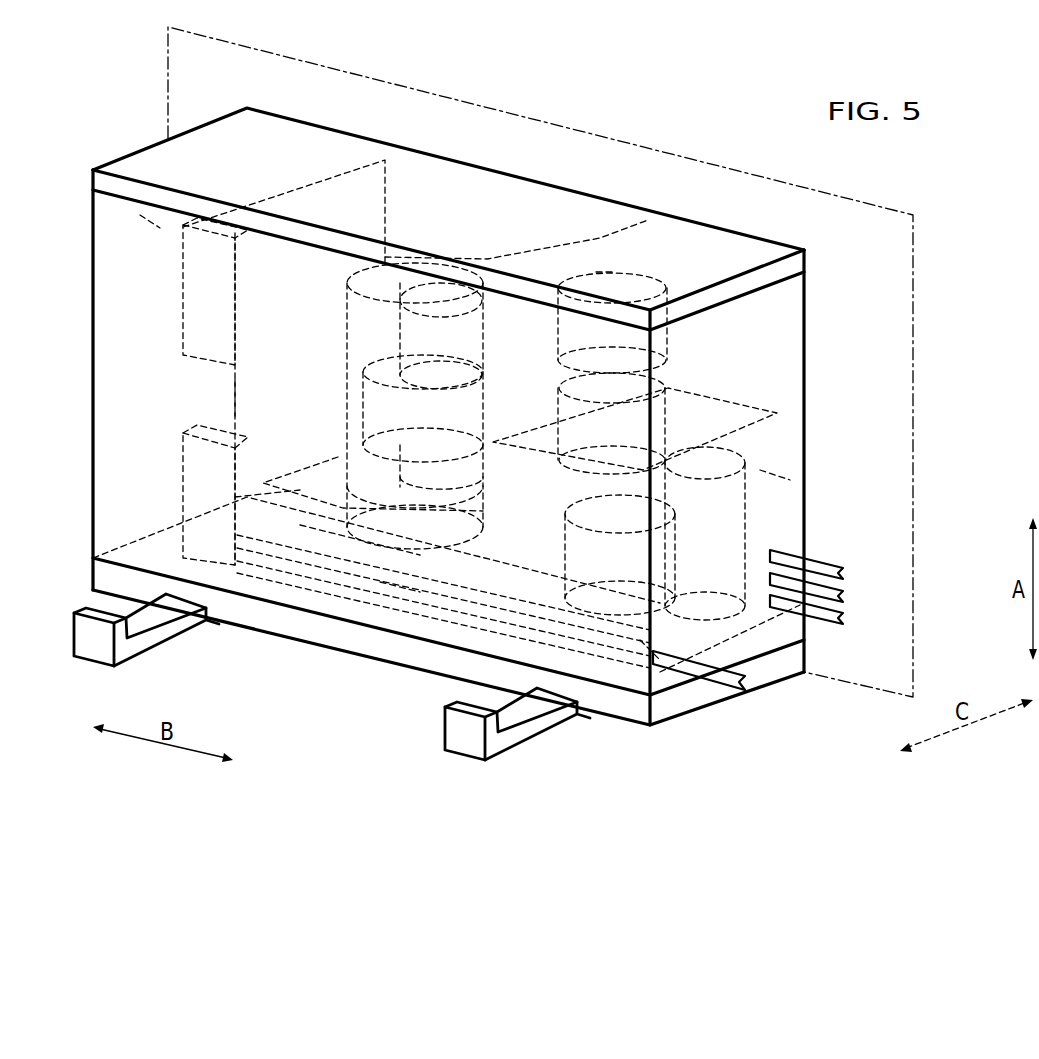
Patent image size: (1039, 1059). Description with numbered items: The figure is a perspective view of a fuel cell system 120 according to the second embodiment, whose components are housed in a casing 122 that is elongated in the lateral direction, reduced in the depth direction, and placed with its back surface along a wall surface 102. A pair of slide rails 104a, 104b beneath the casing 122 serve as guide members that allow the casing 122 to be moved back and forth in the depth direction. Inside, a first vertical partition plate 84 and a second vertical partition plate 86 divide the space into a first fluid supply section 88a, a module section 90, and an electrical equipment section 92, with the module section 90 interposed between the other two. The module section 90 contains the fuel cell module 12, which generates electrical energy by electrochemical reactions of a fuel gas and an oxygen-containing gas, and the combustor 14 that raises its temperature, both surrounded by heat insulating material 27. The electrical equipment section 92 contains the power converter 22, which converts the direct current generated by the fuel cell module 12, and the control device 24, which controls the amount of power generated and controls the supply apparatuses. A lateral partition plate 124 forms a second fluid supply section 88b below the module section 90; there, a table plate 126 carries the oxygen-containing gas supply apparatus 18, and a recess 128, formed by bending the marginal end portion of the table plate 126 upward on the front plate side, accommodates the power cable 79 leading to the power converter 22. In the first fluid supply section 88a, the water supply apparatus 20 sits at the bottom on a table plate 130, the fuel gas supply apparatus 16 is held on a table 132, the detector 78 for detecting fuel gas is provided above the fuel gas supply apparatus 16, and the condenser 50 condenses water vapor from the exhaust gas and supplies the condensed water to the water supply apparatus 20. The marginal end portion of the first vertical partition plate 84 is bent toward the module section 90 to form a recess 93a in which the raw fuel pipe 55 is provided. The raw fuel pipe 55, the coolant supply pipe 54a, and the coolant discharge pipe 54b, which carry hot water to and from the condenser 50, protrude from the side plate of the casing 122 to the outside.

The fuel cell system 120 is at (779, 121).
The casing 122 is at (333, 127).
The wall surface 102 is at (916, 254).
The electrical equipment section 92 is at (150, 222).
The module section 90 is at (285, 258).
The control device 24 is at (178, 267).
The power converter 22 is at (181, 455).
The second vertical partition plate 86 is at (234, 399).
The second fluid supply section 88b is at (233, 500).
The first fluid supply section 88a is at (772, 480).
The combustor 14 is at (484, 496).
The fuel cell module 12 is at (484, 268).
The first vertical partition plate 84 is at (438, 450).
The heat insulating material 27 is at (344, 398).
The lateral partition plate 124 is at (313, 462).
The oxygen-containing gas supply apparatus 18 is at (345, 512).
The recess 93a is at (604, 272).
The detector 78 is at (557, 337).
The fuel gas supply apparatus 16 is at (556, 397).
The table 132 is at (758, 402).
The condenser 50 is at (748, 503).
The water supply apparatus 20 is at (694, 576).
The table plate 130 is at (650, 652).
The raw fuel pipe 55 is at (846, 570).
The coolant supply pipe 54a is at (846, 593).
The coolant discharge pipe 54b is at (846, 616).
The power cable 79 is at (722, 678).
The table plate 126 is at (430, 588).
The recess 128 is at (397, 601).
The slide rail 104a is at (530, 731).
The slide rail 104b is at (160, 637).